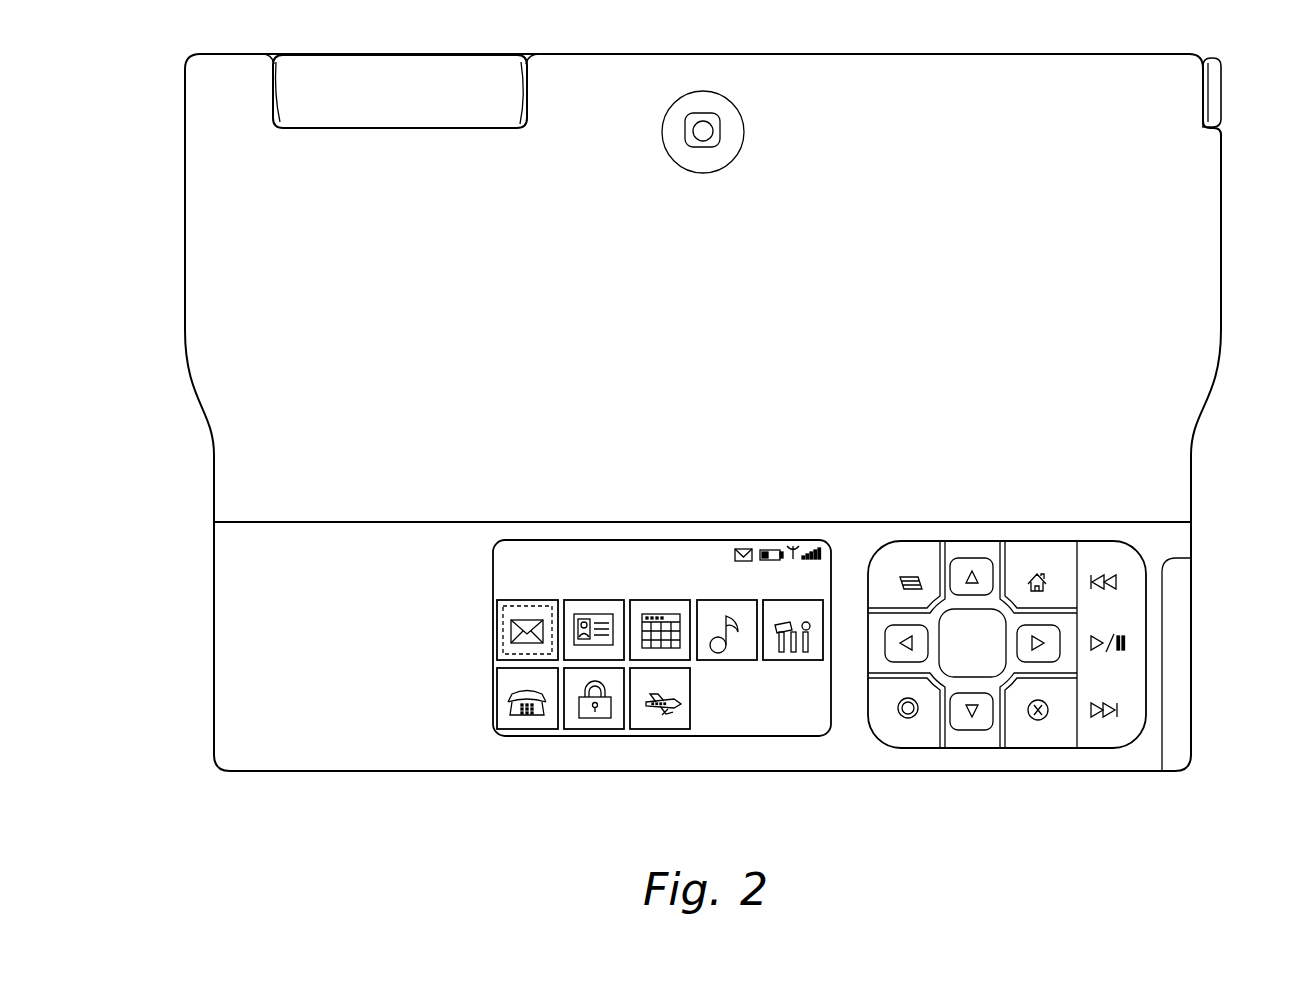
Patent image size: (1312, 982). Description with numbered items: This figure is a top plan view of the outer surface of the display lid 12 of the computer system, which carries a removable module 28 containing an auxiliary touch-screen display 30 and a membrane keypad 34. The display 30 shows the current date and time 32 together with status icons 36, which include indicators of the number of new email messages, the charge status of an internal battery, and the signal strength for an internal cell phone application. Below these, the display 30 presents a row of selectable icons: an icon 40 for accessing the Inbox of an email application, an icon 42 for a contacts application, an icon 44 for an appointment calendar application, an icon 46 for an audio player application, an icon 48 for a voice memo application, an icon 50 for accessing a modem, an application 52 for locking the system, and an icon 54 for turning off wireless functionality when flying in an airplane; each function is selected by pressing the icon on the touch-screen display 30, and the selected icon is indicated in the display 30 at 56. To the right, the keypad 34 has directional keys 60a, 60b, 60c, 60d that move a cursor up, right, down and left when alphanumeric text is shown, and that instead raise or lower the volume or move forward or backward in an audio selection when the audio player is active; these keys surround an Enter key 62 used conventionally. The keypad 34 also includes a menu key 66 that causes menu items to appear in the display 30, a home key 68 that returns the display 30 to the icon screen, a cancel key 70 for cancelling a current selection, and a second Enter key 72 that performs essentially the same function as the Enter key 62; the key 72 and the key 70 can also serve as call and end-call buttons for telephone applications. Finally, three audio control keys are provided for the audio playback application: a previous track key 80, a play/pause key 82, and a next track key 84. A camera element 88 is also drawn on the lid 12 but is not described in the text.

The lid 12 is at (1198, 306).
The removable module 28 is at (385, 722).
The auxiliary touch-screen display 30 is at (748, 718).
The current date and time 32 is at (515, 545).
The membrane keypad 34 is at (995, 752).
The status icons 36 is at (786, 532).
The icon 40 is at (512, 630).
The icon 42 is at (590, 610).
The icon 44 is at (668, 608).
The icon 46 is at (723, 610).
The icon 48 is at (790, 612).
The icon 50 is at (515, 710).
The application 52 is at (593, 712).
The icon 54 is at (668, 710).
The selected icon indication 56 is at (497, 583).
The directional key 60a is at (962, 560).
The directional key 60b is at (1053, 648).
The directional key 60c is at (973, 723).
The directional key 60d is at (887, 642).
The Enter key 62 is at (985, 620).
The menu key 66 is at (893, 562).
The home key 68 is at (1047, 567).
The cancel key 70 is at (1048, 716).
The Enter key 72 is at (908, 718).
The previous track key 80 is at (1113, 580).
The play/pause key 82 is at (1128, 638).
The next track key 84 is at (1117, 712).
The camera 88 is at (705, 131).